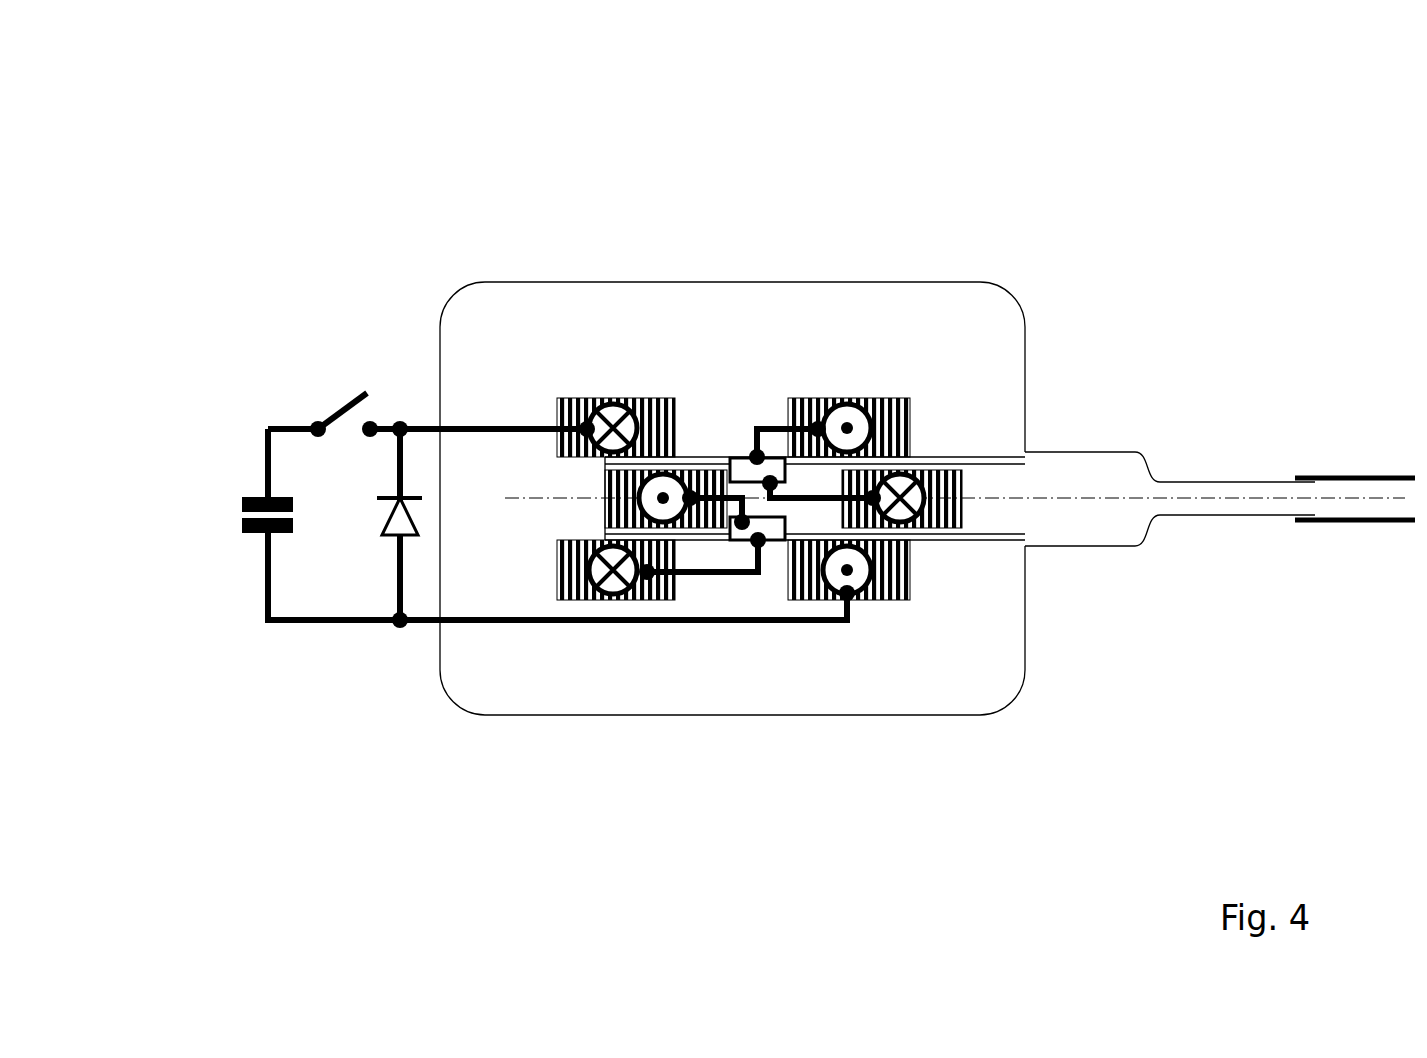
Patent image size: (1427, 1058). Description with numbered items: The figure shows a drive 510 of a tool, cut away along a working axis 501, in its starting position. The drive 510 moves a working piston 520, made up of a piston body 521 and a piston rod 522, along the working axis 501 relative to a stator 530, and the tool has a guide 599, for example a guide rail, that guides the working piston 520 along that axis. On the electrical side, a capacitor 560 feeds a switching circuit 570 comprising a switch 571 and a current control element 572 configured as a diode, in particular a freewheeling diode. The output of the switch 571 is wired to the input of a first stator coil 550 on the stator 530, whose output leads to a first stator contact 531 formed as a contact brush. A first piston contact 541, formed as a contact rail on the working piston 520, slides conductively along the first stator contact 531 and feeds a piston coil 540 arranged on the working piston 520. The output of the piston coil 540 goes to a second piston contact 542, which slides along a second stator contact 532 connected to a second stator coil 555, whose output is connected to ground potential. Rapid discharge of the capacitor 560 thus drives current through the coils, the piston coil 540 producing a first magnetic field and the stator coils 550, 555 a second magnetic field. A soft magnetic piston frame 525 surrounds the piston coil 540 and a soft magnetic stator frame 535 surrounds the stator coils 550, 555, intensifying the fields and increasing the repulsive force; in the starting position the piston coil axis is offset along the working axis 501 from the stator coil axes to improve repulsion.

The working axis 501 is at (946, 489).
The drive 510 is at (218, 112).
The working piston 520 is at (1170, 350).
The piston body 521 is at (1088, 475).
The piston rod 522 is at (1240, 488).
The piston frame 525 is at (985, 487).
The stator 530 is at (732, 582).
The first stator contact 531 is at (755, 455).
The second stator contact 532 is at (758, 542).
The stator frame 535 is at (710, 652).
The piston coil 540 is at (713, 477).
The first piston contact 541 is at (775, 466).
The second piston contact 542 is at (777, 528).
The first stator coil 550 is at (577, 408).
The second stator coil 555 is at (575, 565).
The capacitor 560 is at (262, 513).
The switching circuit 570 is at (351, 384).
The switch 571 is at (340, 408).
The current control element 572 is at (398, 527).
The guide 599 is at (1356, 520).